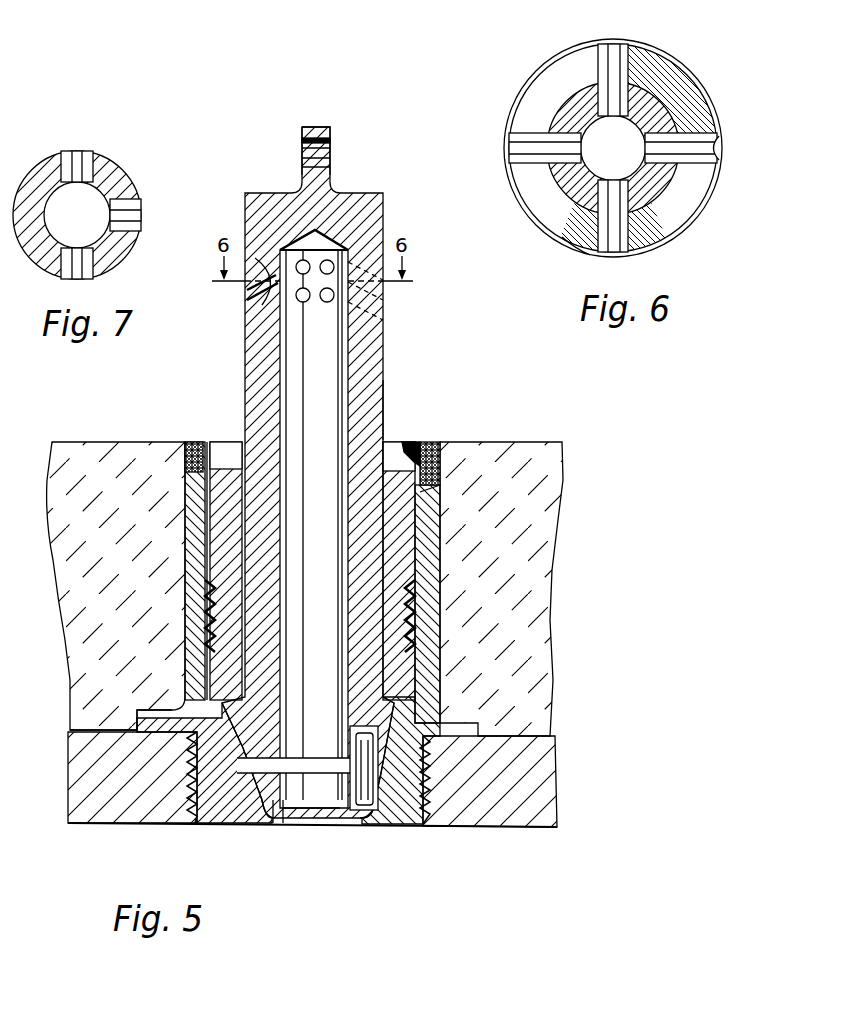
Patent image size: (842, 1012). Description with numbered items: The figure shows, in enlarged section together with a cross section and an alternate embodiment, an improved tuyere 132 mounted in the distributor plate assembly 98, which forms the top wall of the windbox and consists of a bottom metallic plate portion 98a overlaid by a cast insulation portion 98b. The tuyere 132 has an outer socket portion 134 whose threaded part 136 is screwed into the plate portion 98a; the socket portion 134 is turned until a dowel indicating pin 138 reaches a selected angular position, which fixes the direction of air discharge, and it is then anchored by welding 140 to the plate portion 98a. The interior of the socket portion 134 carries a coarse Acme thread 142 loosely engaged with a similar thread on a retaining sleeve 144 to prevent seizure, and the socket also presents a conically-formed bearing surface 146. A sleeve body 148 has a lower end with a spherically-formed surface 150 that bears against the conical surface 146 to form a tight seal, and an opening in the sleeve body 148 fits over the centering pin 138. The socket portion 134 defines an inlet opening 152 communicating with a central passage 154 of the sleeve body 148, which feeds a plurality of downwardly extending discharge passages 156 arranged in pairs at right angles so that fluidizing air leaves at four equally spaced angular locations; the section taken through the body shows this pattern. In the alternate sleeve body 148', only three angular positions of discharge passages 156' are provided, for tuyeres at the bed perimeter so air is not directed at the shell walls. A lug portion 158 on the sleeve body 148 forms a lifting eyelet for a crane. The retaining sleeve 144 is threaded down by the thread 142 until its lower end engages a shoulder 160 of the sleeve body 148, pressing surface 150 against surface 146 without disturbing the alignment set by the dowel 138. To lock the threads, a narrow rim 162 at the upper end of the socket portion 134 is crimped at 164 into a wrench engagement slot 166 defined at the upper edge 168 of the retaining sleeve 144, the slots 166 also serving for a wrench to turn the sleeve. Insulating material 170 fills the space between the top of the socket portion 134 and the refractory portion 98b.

In FIG. 5, the distributor plate assembly 98 is at (363, 634).
In FIG. 5, the bottom metallic plate portion 98a is at (548, 777).
In FIG. 5, the cast insulation portion 98b is at (548, 664).
In FIG. 5, the tuyere 132 is at (392, 364).
In FIG. 5, the socket portion 134 is at (425, 795).
In FIG. 6, the socket portion 134 is at (690, 210).
In FIG. 5, the threaded part 136 is at (488, 805).
In FIG. 5, the dowel indicating pin 138 is at (372, 815).
In FIG. 5, the welding 140 is at (195, 795).
In FIG. 5, the coarse thread 142 is at (200, 640).
In FIG. 5, the retaining sleeve 144 is at (420, 610).
In FIG. 6, the retaining sleeve 144 is at (545, 200).
In FIG. 5, the conically-formed bearing surface 146 is at (245, 808).
In FIG. 5, the sleeve body 148 is at (402, 410).
In FIG. 7, the sleeve body 148' is at (99, 210).
In FIG. 5, the spherically-formed surface 150 is at (370, 803).
In FIG. 5, the inlet opening 152 is at (318, 812).
In FIG. 5, the central passage 154 is at (300, 374).
In FIG. 5, the discharge passages 156 is at (281, 297).
In FIG. 6, the discharge passages 156 is at (583, 127).
In FIG. 7, the discharge passages 156' is at (101, 196).
In FIG. 5, the lug portion 158 is at (340, 90).
In FIG. 5, the shoulder 160 is at (165, 668).
In FIG. 5, the rim 162 is at (195, 442).
In FIG. 6, the rim 162 is at (665, 248).
In FIG. 5, the crimp 164 is at (432, 445).
In FIG. 6, the crimp 164 is at (722, 150).
In FIG. 5, the wrench engagement slot 166 is at (228, 455).
In FIG. 6, the wrench engagement slot 166 is at (600, 55).
In FIG. 5, the upper edge 168 is at (408, 442).
In FIG. 6, the upper edge 168 is at (572, 250).
In FIG. 5, the insulating material 170 is at (470, 470).